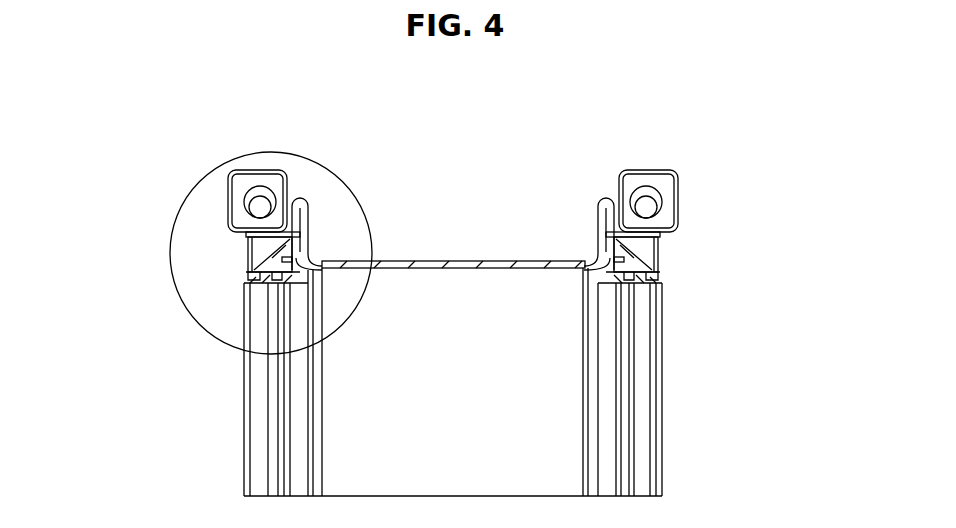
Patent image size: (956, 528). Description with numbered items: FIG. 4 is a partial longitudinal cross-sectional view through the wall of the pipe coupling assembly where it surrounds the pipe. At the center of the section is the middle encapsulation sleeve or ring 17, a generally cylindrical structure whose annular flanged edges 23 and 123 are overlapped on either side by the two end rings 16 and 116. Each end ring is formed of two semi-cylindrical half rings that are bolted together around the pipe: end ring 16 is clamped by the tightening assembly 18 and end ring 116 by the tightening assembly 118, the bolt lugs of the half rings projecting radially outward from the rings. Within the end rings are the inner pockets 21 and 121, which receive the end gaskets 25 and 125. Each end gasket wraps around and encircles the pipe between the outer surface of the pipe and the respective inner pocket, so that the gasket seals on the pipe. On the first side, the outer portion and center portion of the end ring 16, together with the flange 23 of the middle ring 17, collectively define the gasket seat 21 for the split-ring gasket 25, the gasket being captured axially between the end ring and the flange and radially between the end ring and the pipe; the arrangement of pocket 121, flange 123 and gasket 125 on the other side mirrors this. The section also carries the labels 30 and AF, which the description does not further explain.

The end ring 16 is at (298, 192).
The middle encapsulation sleeve or ring 17 is at (412, 270).
The tightening assembly 18 is at (245, 238).
The inner pocket 21 is at (243, 278).
The annular flanged edge 23 is at (307, 238).
The end gasket 25 is at (252, 252).
The wall top portion 30 is at (267, 280).
The airflow direction AF is at (348, 318).
The end ring 116 is at (607, 192).
The tightening assembly 118 is at (659, 186).
The inner pocket 121 is at (668, 263).
The annular flanged edge 123 is at (597, 248).
The end gasket 125 is at (659, 245).